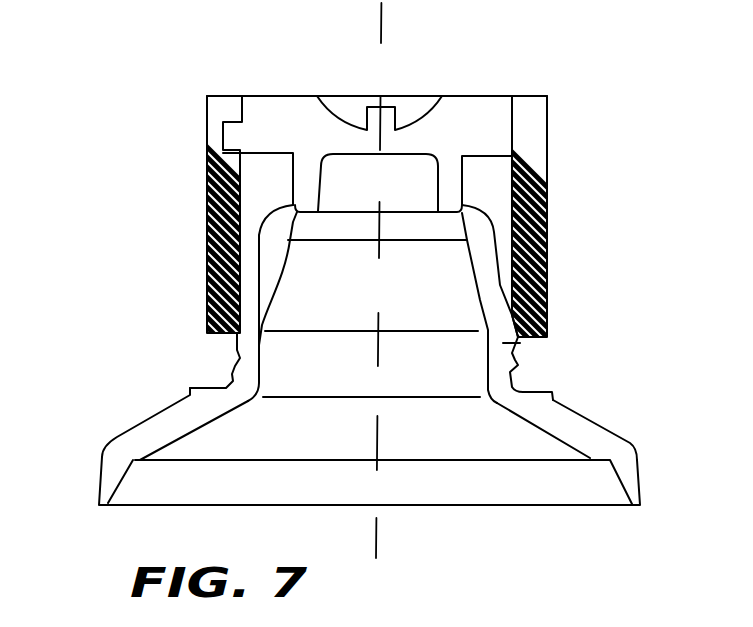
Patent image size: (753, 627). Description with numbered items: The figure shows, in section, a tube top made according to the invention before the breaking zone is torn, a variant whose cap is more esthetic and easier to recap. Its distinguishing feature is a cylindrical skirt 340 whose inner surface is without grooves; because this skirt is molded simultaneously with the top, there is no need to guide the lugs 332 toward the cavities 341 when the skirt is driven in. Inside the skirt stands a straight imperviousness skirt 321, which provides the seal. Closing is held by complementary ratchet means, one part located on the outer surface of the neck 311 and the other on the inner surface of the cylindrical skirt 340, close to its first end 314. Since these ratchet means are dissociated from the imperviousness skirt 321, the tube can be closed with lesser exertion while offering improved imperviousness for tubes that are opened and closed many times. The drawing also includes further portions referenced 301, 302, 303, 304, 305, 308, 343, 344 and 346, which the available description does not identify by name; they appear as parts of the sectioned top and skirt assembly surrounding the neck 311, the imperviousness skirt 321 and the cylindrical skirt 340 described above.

The dispensing closure assembly 301 is at (127, 313).
The base flange 302 is at (103, 458).
The annular rib 303 is at (503, 343).
The lip 304 is at (245, 361).
The bellows body 305 is at (260, 268).
The skirt 308 is at (187, 392).
The neck 311 is at (518, 365).
The first end of the cylindrical skirt 314 is at (543, 297).
The straight imperviousness skirt 321 is at (453, 182).
The lugs 332 is at (208, 135).
The cylindrical skirt 340 is at (552, 232).
The cavities 341 is at (208, 103).
The dome recess 343 is at (547, 95).
The cap bottom edge 344 is at (543, 327).
The cavity 346 is at (265, 180).